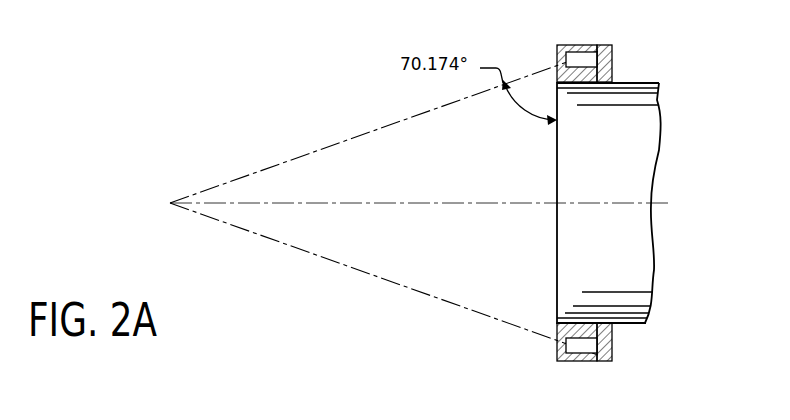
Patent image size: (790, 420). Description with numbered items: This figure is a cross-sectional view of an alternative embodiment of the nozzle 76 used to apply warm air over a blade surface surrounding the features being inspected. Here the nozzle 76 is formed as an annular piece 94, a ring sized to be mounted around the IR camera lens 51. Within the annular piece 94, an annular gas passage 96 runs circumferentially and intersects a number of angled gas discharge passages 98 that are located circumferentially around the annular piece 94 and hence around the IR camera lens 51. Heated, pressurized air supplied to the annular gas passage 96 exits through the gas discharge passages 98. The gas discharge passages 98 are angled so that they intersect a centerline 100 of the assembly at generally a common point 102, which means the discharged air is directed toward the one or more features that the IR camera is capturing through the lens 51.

The IR camera lens 51 is at (626, 324).
The nozzle 76 is at (578, 46).
The annular piece 94 is at (607, 46).
The annular gas passage 96 is at (598, 361).
The gas discharge passages 98 is at (557, 348).
The centerline 100 is at (667, 203).
The common point 102 is at (169, 206).